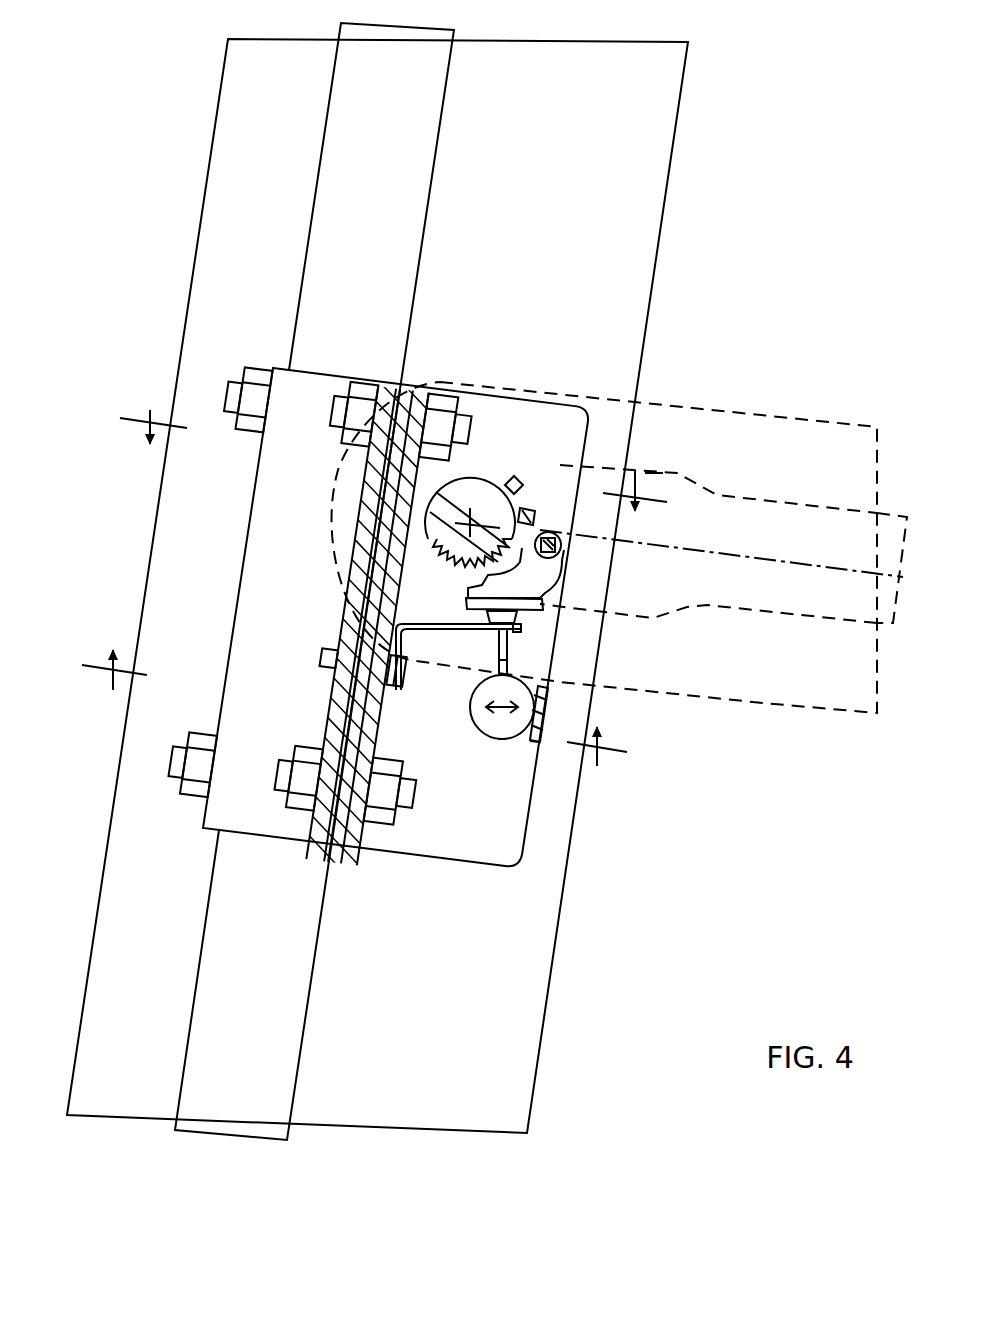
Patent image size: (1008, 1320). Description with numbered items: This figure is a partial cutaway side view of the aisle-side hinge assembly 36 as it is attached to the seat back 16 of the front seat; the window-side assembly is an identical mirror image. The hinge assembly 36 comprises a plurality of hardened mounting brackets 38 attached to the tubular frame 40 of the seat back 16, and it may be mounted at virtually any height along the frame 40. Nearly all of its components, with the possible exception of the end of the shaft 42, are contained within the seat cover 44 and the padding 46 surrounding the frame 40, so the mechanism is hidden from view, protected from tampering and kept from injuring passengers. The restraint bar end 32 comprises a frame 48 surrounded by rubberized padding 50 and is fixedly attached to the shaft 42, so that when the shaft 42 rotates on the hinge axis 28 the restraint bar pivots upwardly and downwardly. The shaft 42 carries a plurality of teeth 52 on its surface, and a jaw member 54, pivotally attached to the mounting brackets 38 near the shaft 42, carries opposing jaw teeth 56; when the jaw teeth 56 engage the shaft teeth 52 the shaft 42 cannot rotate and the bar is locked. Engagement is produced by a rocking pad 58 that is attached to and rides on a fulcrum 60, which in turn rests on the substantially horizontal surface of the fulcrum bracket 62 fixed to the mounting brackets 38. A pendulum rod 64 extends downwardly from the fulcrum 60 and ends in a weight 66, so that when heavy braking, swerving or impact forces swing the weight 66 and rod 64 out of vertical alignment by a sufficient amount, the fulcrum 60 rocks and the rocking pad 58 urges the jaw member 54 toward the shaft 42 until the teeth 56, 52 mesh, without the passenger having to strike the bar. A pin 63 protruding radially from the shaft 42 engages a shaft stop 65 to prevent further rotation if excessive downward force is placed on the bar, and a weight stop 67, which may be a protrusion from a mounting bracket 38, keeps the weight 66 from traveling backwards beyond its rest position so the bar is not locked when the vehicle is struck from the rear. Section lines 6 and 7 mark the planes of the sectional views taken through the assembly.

The seat back 16 is at (182, 220).
The hinge axis 28 is at (515, 480).
The restraint bar end 32 is at (858, 745).
The aisle-side hinge assembly 36 is at (246, 498).
The mounting brackets 38 is at (405, 852).
The frame 40 is at (355, 128).
The shaft 42 is at (473, 513).
The seat cover 44 is at (670, 187).
The padding 46 is at (582, 148).
The frame 48 is at (752, 524).
The padding 50 is at (750, 690).
The teeth 52 is at (550, 532).
The jaw member 54 is at (548, 572).
The jaw teeth 56 is at (467, 597).
The rocking pad 58 is at (520, 606).
The fulcrum 60 is at (508, 623).
The fulcrum bracket 62 is at (418, 625).
The pin 63 is at (520, 480).
The pendulum rod 64 is at (496, 655).
The shaft stop 65 is at (540, 508).
The weight 66 is at (540, 742).
The weight stop 67 is at (502, 740).
The section line 6- 6 is at (393, 450).
The section line 7- 7 is at (354, 712).